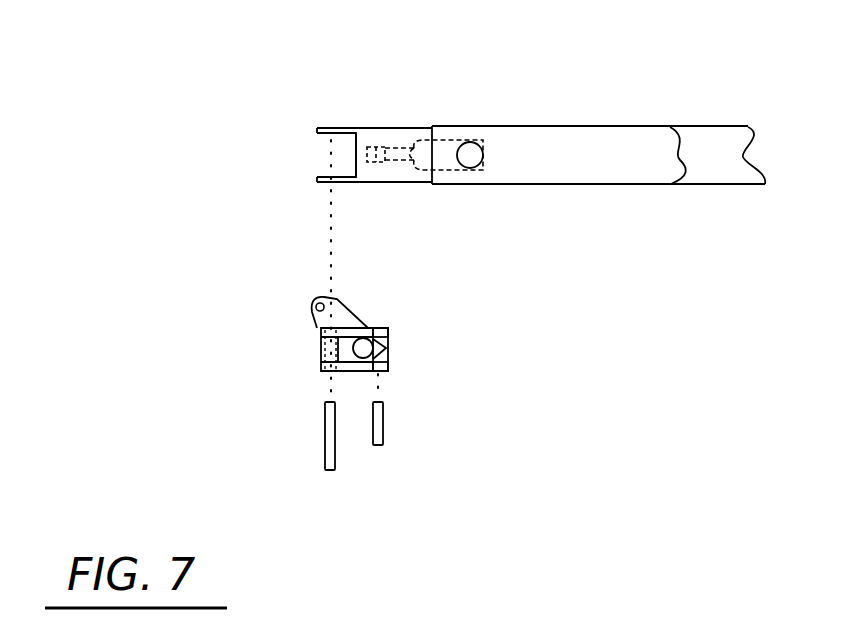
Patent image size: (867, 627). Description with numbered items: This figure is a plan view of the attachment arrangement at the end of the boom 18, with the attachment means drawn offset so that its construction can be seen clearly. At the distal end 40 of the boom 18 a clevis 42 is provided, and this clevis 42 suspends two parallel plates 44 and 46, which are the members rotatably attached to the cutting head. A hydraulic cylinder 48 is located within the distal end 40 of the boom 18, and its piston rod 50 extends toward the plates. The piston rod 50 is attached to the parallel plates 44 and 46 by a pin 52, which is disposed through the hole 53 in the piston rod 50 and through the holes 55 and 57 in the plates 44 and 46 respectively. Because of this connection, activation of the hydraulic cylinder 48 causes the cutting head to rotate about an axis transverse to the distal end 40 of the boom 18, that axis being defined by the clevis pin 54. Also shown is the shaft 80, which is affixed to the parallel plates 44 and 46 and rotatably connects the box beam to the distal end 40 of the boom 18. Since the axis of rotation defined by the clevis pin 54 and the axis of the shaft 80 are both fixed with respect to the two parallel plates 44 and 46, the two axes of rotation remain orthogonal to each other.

The boom 18 is at (597, 127).
The distal end 40 is at (350, 127).
The clevis 42 is at (353, 155).
The hole 53 is at (377, 147).
The piston rod 50 is at (401, 147).
The hydraulic cylinder 48 is at (483, 142).
The parallel plate 46 is at (352, 328).
The hole 57 is at (377, 328).
The hole 55 is at (378, 373).
The parallel plate 44 is at (350, 373).
The shaft 80 is at (373, 348).
The clevis pin 54 is at (323, 435).
The pin 52 is at (383, 422).